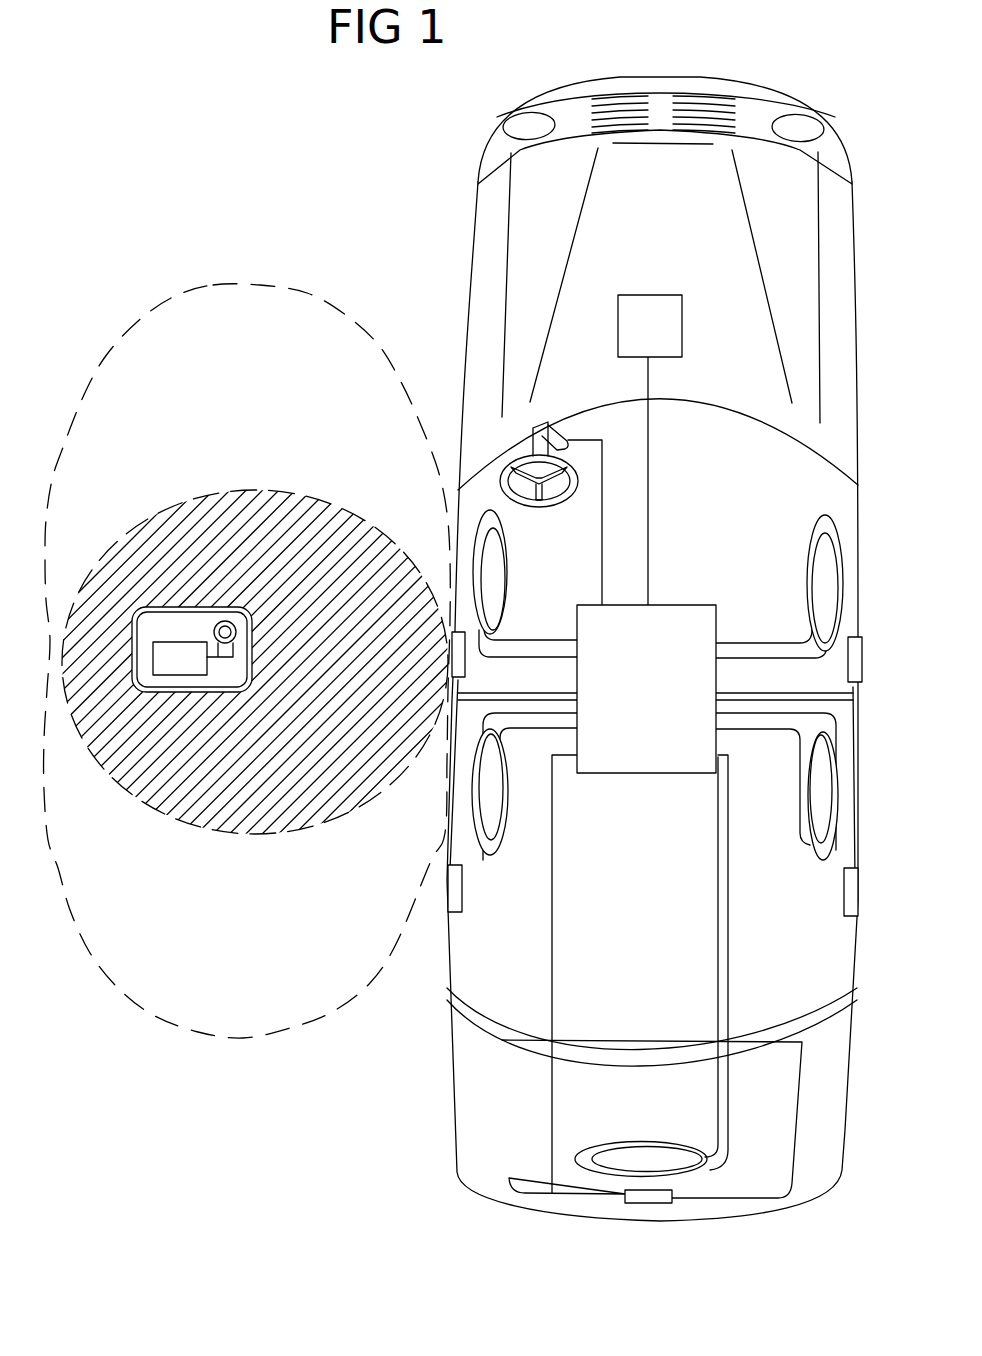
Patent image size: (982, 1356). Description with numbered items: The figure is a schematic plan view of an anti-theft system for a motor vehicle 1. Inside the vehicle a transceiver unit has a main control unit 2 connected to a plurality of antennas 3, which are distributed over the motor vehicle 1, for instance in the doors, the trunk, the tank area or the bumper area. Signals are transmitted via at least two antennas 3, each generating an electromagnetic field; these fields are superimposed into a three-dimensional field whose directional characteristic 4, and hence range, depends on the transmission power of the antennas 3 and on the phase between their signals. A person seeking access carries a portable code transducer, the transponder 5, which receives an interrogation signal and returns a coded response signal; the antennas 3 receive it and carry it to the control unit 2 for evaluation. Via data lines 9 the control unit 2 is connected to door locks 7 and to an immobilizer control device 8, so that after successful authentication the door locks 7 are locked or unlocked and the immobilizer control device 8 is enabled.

The motor vehicle 1 is at (440, 226).
The main control unit 2 is at (682, 627).
The antennas 3 is at (512, 566).
The directional characteristic 4 is at (212, 285).
The transponder 5 is at (165, 575).
The door locks 7 is at (453, 632).
The immobilizer control device 8 is at (650, 308).
The data lines 9 is at (652, 467).